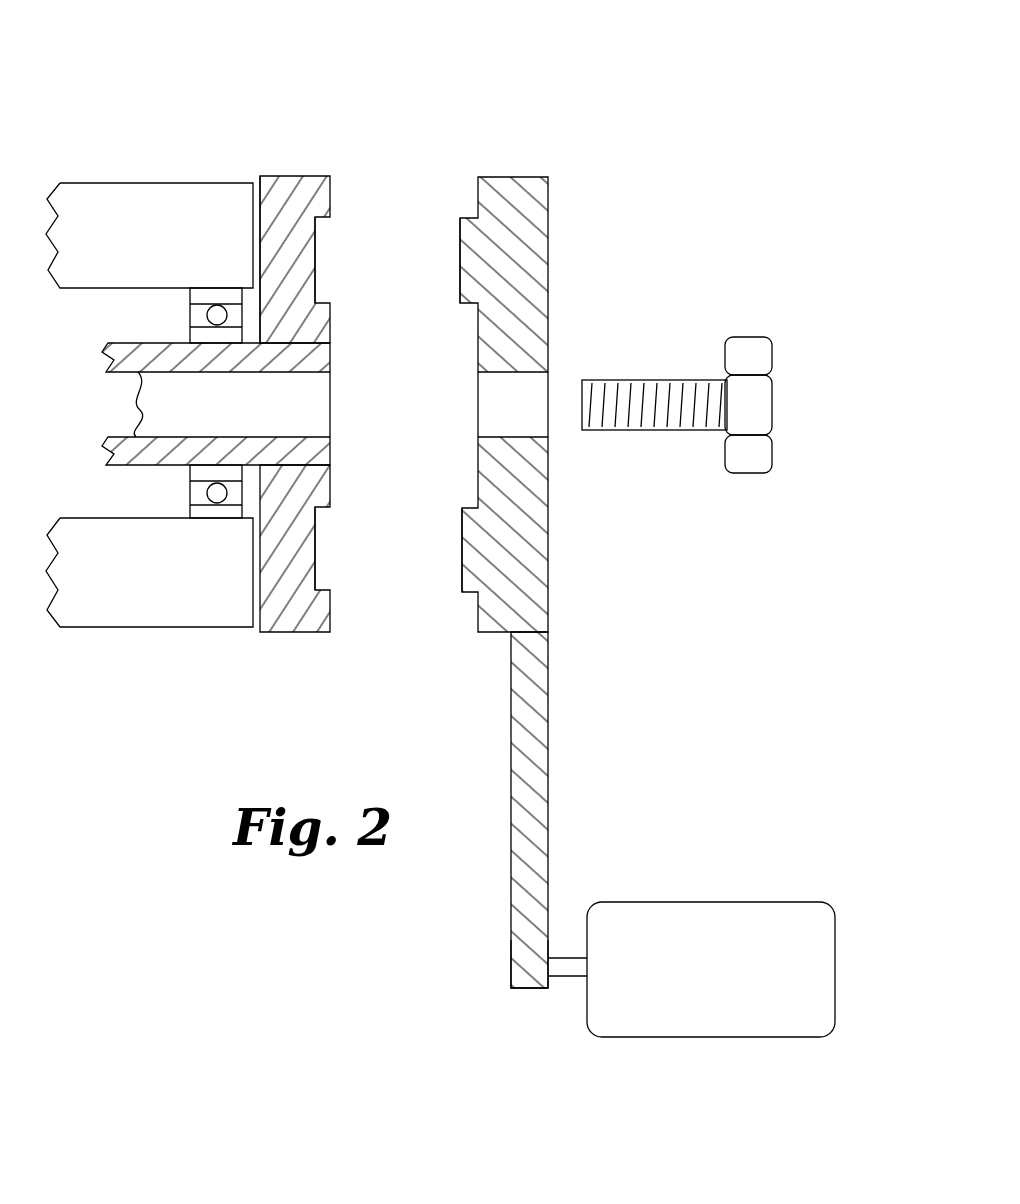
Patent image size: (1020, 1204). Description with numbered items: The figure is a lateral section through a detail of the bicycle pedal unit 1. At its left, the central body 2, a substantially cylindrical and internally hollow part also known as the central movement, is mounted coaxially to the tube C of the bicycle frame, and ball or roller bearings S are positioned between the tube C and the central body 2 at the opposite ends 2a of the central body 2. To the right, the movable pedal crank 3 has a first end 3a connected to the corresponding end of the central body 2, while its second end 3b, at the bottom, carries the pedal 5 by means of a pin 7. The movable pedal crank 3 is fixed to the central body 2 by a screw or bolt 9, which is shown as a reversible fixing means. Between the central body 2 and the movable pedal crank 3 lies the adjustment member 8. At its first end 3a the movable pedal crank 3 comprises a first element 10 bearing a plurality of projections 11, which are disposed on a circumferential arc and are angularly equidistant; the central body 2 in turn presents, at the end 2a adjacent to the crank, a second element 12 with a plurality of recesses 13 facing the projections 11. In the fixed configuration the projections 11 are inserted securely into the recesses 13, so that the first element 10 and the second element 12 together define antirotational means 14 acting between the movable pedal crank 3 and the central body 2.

The bicycle pedal unit 1 is at (651, 96).
The central body 2 is at (310, 175).
The opposite ends of the central body 2a is at (250, 456).
The movable pedal crank 3 is at (549, 760).
The first end of the pedal crank 3a is at (540, 625).
The second end of the pedal crank 3b is at (525, 965).
The pedal 5 is at (205, 297).
The pin 7 is at (568, 968).
The adjustment member 8 is at (388, 623).
The screw or bolt 9 is at (760, 400).
The first element 10 is at (538, 229).
The projections 11 is at (462, 240).
The second element 12 is at (270, 190).
The recesses 13 is at (316, 268).
The antirotational means 14 is at (388, 227).
The tube of a bicycle frame C is at (78, 200).
The ball or roller bearings S is at (210, 315).